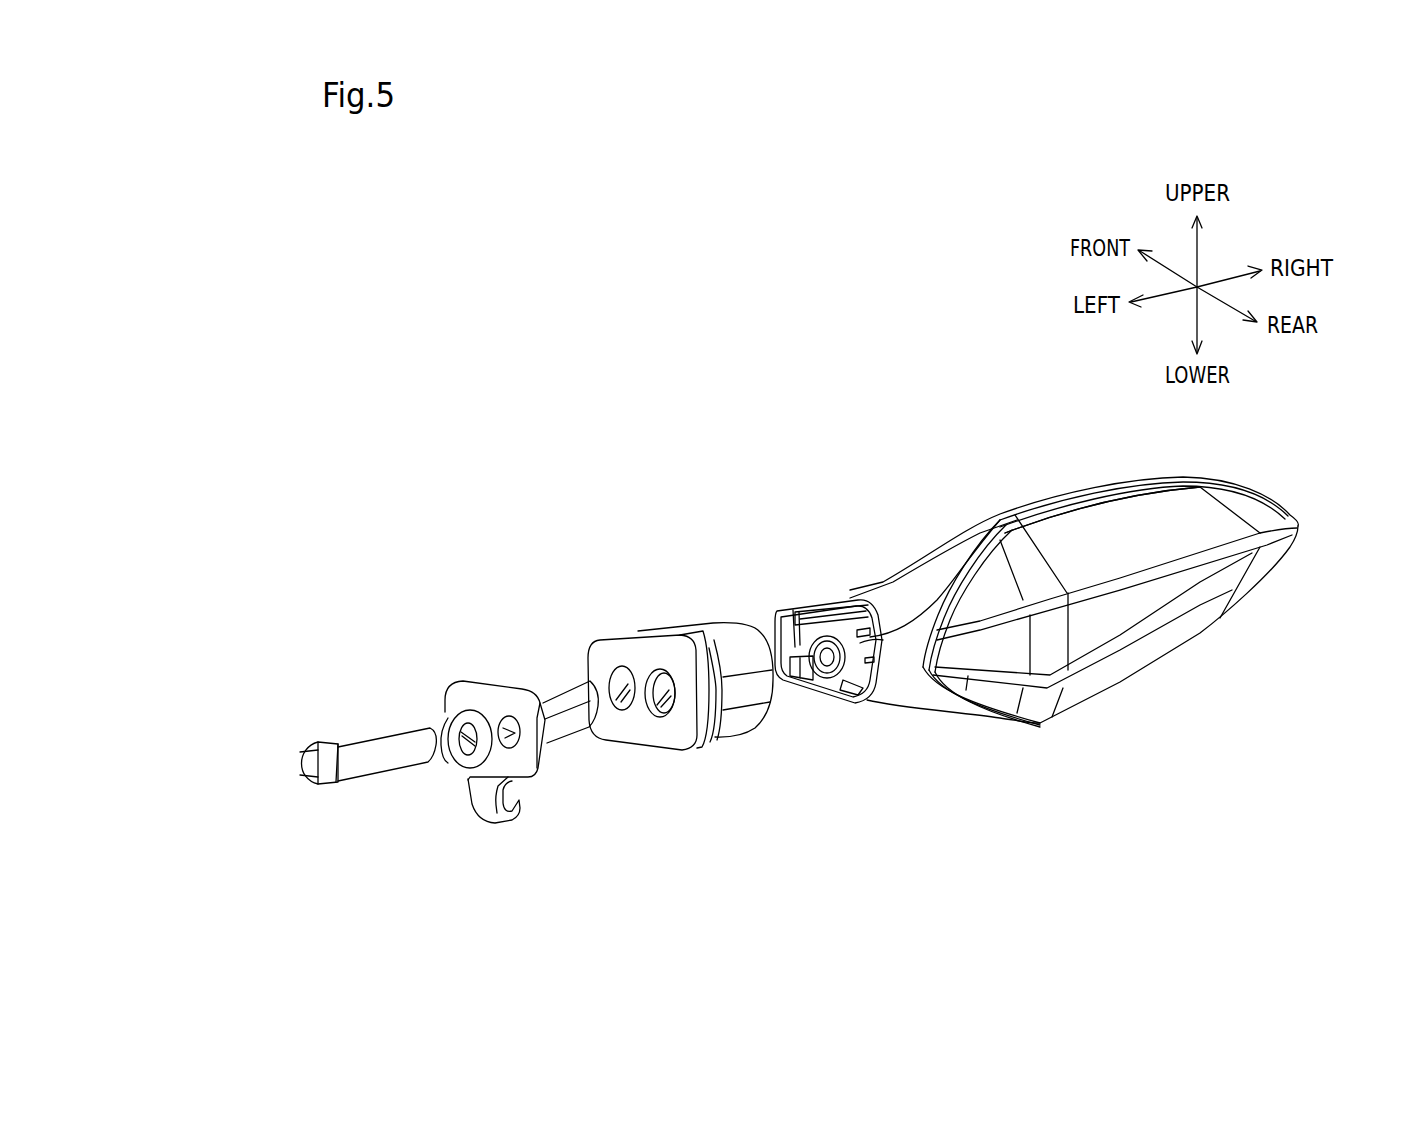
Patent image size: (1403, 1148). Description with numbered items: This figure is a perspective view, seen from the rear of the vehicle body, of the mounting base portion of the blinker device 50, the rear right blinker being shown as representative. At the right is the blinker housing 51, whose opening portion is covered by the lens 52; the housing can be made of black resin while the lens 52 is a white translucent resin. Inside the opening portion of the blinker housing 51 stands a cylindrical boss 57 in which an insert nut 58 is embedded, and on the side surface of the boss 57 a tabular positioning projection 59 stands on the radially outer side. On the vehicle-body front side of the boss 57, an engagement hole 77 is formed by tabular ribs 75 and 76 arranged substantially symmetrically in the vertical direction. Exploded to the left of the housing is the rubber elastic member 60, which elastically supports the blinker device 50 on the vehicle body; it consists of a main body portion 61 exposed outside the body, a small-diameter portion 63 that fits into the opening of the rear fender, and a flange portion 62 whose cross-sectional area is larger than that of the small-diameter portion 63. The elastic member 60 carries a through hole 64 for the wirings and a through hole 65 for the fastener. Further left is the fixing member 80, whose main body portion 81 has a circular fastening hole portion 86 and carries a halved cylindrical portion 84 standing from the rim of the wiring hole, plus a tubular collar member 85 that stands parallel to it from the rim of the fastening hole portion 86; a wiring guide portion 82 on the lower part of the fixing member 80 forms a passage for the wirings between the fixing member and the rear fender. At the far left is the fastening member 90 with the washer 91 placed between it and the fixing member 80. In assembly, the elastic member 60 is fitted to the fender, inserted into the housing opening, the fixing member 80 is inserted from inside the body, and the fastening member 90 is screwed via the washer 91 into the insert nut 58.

The blinker device 50 is at (732, 513).
The blinker housing 51 is at (931, 565).
The lens 52 is at (1095, 520).
The cylindrical boss 57 is at (878, 643).
The insert nut 58 is at (828, 670).
The positioning projection 59 is at (845, 688).
The elastic member 60 is at (688, 615).
The main body portion 61 is at (745, 724).
The flange portion 62 is at (618, 652).
The small-diameter portion 63 is at (722, 737).
The through hole for wiring 64 is at (624, 712).
The through hole for fastening member 65 is at (663, 717).
The tabular rib 75 is at (818, 614).
The tabular rib 76 is at (808, 681).
The engagement hole 77 is at (788, 640).
The fixing member 80 is at (457, 673).
The main body portion 81 is at (457, 694).
The wiring guide portion 82 is at (479, 800).
The halved cylindrical portion 84 is at (556, 690).
The tubular collar member 85 is at (569, 725).
The fastening hole portion 86 is at (504, 718).
The fastening member 90 is at (304, 767).
The washer 91 is at (456, 752).